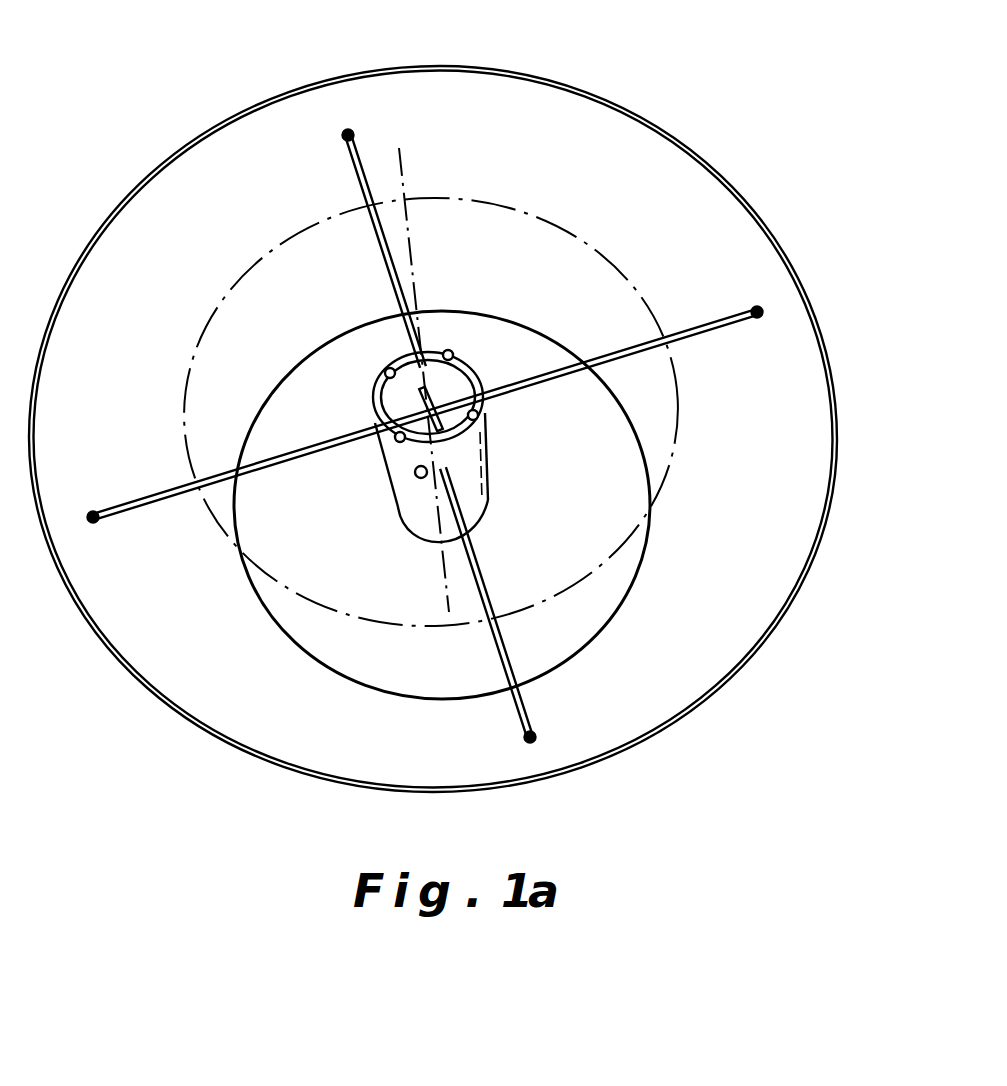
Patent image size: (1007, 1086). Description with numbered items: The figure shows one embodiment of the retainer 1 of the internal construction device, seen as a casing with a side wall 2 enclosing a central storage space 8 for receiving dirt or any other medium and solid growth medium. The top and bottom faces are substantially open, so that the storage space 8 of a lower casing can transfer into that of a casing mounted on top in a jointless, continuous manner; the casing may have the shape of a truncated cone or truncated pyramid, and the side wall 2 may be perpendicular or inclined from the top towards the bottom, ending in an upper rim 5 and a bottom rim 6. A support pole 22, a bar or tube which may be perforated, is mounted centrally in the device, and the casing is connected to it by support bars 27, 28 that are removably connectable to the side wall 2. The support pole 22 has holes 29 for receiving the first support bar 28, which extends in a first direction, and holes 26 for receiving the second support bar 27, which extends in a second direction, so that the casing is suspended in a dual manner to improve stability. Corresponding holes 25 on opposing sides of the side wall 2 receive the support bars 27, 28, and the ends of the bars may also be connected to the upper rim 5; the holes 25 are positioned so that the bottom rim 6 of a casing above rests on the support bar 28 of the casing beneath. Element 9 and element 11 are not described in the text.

The retainer 1 is at (458, 432).
The side wall 2 is at (707, 637).
The upper rim 5 is at (833, 500).
The bottom rim 6 is at (267, 613).
The central storage space 8 is at (533, 255).
The arm 9 is at (413, 272).
The opening 11 is at (383, 372).
The support pole 22 is at (492, 460).
The holes 25 is at (352, 131).
The hole 26 is at (378, 432).
The second support bar 27 is at (695, 332).
The first support bar 28 is at (505, 633).
The holes 29 is at (443, 470).